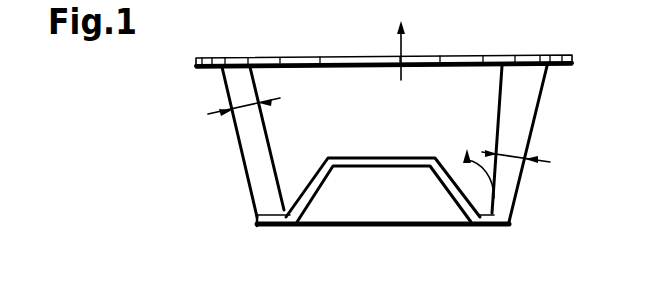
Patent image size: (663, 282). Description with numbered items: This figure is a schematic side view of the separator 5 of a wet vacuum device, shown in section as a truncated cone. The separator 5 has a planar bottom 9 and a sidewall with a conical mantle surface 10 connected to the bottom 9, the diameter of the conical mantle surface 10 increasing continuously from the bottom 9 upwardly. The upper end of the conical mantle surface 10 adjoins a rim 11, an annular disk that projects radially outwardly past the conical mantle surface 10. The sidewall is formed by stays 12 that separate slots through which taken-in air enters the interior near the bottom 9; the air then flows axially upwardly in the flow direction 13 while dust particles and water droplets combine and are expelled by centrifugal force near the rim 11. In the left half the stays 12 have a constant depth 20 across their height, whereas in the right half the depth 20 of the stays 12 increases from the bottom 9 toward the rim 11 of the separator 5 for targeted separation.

The separator 5 is at (214, 182).
The bottom 9 is at (316, 226).
The conical mantle surface 10 is at (532, 132).
The rim 11 is at (555, 52).
The stays 12 is at (527, 100).
The flow direction 13 is at (463, 161).
The depth 20 is at (238, 122).